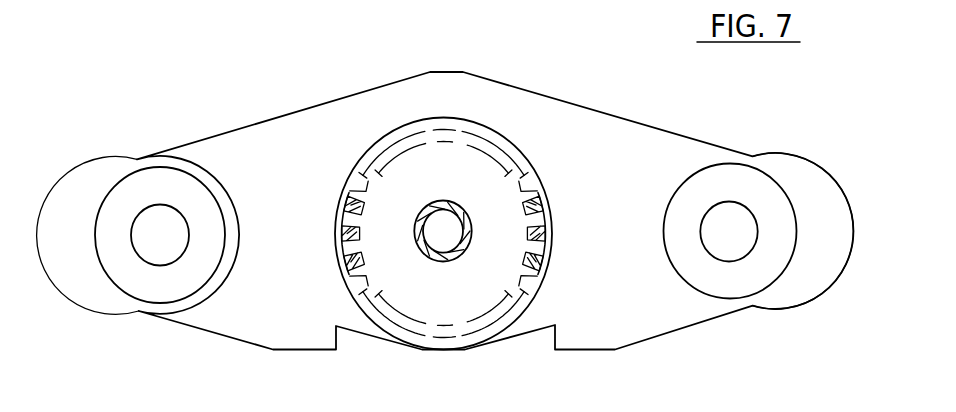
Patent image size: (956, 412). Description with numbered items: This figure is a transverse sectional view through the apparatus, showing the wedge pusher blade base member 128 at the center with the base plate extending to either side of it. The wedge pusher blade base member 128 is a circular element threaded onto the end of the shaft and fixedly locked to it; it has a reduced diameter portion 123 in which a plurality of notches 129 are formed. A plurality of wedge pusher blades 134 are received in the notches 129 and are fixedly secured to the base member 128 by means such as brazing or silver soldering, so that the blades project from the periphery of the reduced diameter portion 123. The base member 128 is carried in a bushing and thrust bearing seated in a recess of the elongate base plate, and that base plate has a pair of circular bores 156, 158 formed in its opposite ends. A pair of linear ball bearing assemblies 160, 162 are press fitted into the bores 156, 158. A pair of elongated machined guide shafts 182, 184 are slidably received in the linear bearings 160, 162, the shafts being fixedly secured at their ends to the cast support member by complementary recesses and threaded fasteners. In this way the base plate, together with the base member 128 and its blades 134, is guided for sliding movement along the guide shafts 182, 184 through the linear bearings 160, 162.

The reduced diameter portion 123 is at (547, 233).
The wedge pusher blade base member 128 is at (488, 175).
The notches 129 is at (543, 203).
The wedge pusher blades 134 is at (542, 260).
The circular bore 156 is at (767, 185).
The circular bore 158 is at (129, 177).
The linear ball bearing assembly 160 is at (780, 223).
The linear ball bearing assembly 162 is at (135, 282).
The guide shaft 182 is at (735, 250).
The guide shaft 184 is at (173, 223).